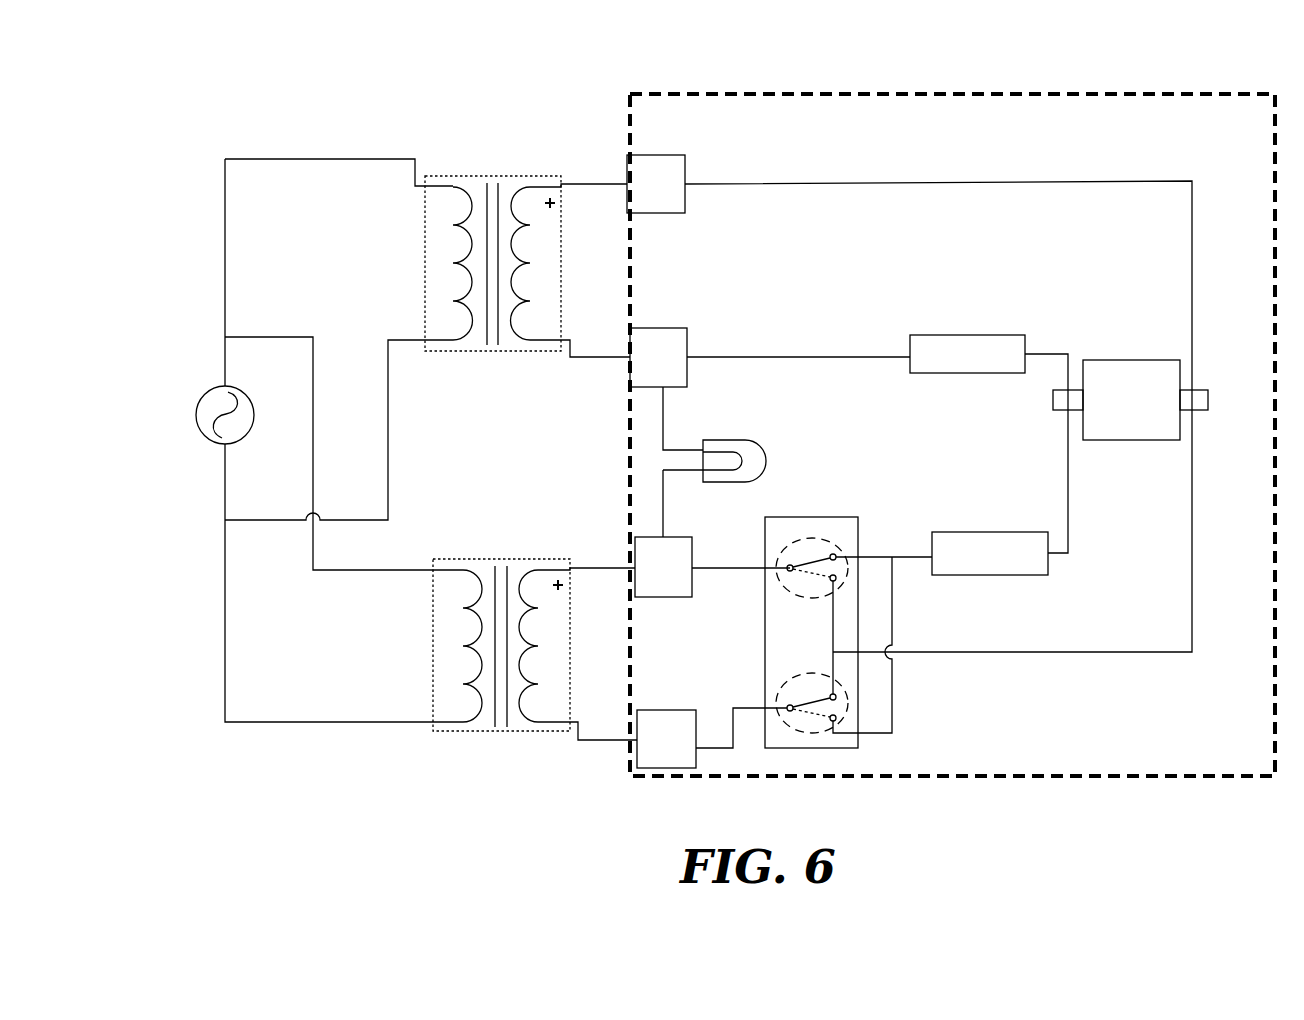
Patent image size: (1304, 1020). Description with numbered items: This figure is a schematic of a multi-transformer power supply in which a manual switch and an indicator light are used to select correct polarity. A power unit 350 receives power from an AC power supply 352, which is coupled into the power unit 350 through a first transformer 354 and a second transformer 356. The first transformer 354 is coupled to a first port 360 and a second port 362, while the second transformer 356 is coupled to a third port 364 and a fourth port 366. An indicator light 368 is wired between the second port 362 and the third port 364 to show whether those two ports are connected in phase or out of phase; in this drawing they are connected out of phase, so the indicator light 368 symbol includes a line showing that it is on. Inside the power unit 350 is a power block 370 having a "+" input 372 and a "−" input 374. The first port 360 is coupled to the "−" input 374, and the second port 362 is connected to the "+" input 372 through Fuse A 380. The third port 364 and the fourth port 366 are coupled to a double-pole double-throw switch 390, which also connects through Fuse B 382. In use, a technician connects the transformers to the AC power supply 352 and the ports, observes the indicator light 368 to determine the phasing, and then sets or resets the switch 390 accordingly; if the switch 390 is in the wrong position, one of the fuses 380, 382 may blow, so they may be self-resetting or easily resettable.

The power unit 350 is at (903, 105).
The AC power supply 352 is at (218, 383).
The first transformer 354 is at (486, 177).
The second transformer 356 is at (505, 558).
The first port 360 is at (673, 173).
The second port 362 is at (670, 357).
The third port 364 is at (655, 537).
The fourth port 366 is at (677, 752).
The indicator light 368 is at (730, 460).
The power block 370 is at (1137, 360).
The "+" input 372 is at (1053, 400).
The "−" input 374 is at (1205, 390).
The Fuse A 380 is at (975, 335).
The Fuse B 382 is at (998, 578).
The double-pole double-throw switch 390 is at (848, 662).